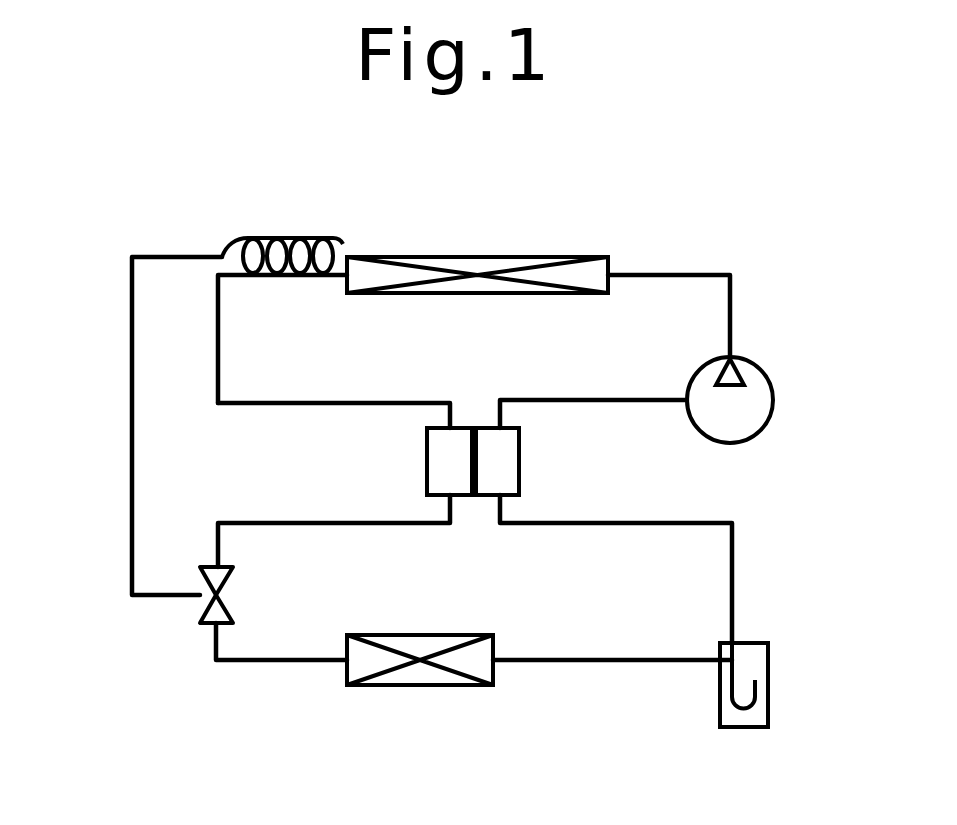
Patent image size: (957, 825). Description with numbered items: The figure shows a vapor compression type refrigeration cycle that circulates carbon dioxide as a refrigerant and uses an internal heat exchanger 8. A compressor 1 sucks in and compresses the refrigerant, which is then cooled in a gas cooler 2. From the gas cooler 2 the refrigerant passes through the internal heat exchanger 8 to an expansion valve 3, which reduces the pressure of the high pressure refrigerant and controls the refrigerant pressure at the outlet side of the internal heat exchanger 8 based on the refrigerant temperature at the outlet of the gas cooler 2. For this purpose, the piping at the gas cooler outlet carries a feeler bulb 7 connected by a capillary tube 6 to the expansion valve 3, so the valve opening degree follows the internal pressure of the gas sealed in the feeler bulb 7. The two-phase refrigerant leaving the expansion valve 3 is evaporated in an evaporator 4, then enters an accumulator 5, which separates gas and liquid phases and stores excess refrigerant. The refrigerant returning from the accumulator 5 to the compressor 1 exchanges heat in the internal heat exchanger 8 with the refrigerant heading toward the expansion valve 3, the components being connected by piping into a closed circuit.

The compressor 1 is at (775, 386).
The gas cooler 2 is at (490, 256).
The expansion valve 3 is at (200, 612).
The evaporator 4 is at (425, 688).
The accumulator 5 is at (768, 665).
The capillary tube 6 is at (128, 428).
The feeler bulb 7 is at (292, 240).
The internal heat exchanger 8 is at (427, 460).